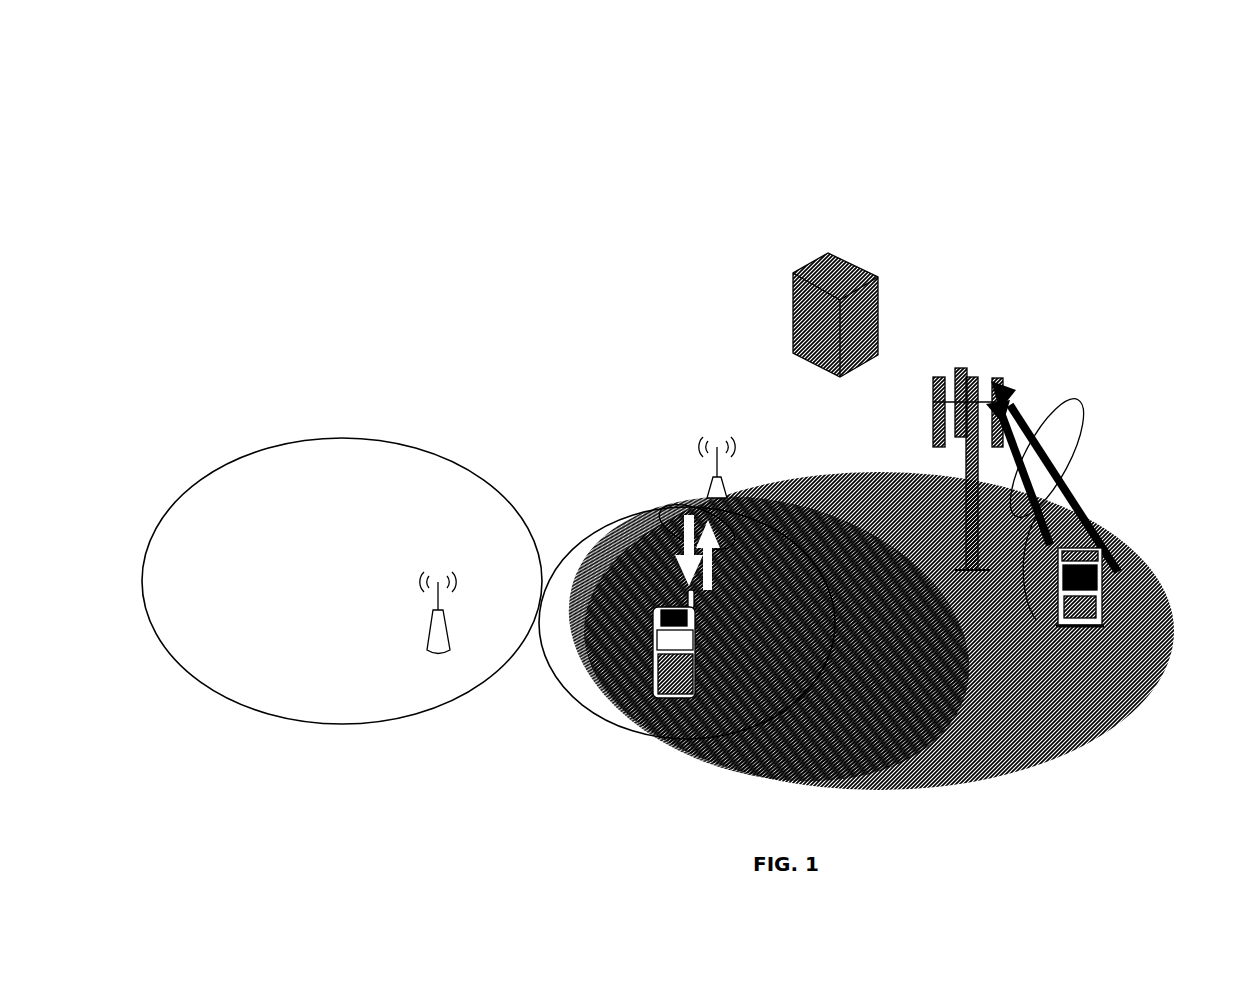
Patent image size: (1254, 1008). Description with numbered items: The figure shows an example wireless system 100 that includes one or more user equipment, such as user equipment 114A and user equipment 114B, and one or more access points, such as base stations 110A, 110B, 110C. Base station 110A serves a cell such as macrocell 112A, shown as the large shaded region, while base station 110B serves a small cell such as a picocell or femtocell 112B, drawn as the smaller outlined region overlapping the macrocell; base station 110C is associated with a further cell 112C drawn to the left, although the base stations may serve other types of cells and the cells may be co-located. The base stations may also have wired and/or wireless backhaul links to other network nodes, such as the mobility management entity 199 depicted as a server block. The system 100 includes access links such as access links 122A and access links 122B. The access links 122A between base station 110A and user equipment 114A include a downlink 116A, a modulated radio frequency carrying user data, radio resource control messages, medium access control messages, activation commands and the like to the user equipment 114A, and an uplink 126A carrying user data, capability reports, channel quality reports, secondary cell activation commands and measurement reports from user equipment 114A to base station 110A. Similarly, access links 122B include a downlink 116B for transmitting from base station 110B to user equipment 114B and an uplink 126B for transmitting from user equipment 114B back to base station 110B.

The system 100 is at (726, 54).
The mobility management entity (MME) 199 is at (879, 285).
The base station 110A is at (1030, 355).
The base station 110B is at (773, 442).
The base station 110C is at (495, 578).
The macrocell 112A is at (1035, 766).
The picocell or femtocell 112B is at (562, 697).
The cell 112C is at (387, 437).
The user equipment 114A is at (1094, 560).
The user equipment 114B is at (672, 700).
The downlink 116A is at (1021, 567).
The downlink 116B is at (661, 550).
The access links 122A is at (1107, 444).
The access links 122B is at (693, 516).
The uplink 126A is at (1093, 522).
The uplink 126B is at (718, 582).